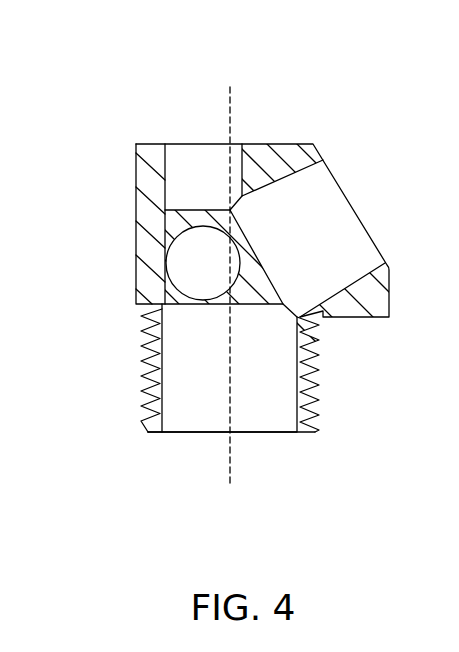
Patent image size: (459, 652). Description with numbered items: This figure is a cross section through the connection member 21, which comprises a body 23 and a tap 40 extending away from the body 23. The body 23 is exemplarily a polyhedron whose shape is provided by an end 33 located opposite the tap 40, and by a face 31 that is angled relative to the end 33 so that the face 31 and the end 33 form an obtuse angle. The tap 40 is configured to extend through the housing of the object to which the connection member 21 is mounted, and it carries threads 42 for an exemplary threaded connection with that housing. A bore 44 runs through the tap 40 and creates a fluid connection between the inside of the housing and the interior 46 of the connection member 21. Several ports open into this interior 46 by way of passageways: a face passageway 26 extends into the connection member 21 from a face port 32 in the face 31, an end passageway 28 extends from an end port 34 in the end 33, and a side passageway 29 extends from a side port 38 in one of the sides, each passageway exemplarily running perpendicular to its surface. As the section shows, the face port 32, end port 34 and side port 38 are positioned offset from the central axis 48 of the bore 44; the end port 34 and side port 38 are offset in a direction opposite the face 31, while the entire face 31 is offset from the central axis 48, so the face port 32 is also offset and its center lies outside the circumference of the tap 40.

The connection member 21 is at (152, 143).
The body 23 is at (103, 178).
The face passageway 26 is at (338, 246).
The end passageway 28 is at (213, 176).
The side passageway 29 is at (188, 260).
The face 31 is at (388, 265).
The face port 32 is at (332, 170).
The end 33 is at (283, 143).
The end port 34 is at (202, 143).
The side port 38 is at (164, 273).
The tap 40 is at (358, 397).
The threads 42 is at (153, 412).
The bore 44 is at (189, 417).
The interior 46 is at (177, 335).
The central axis 48 is at (230, 468).